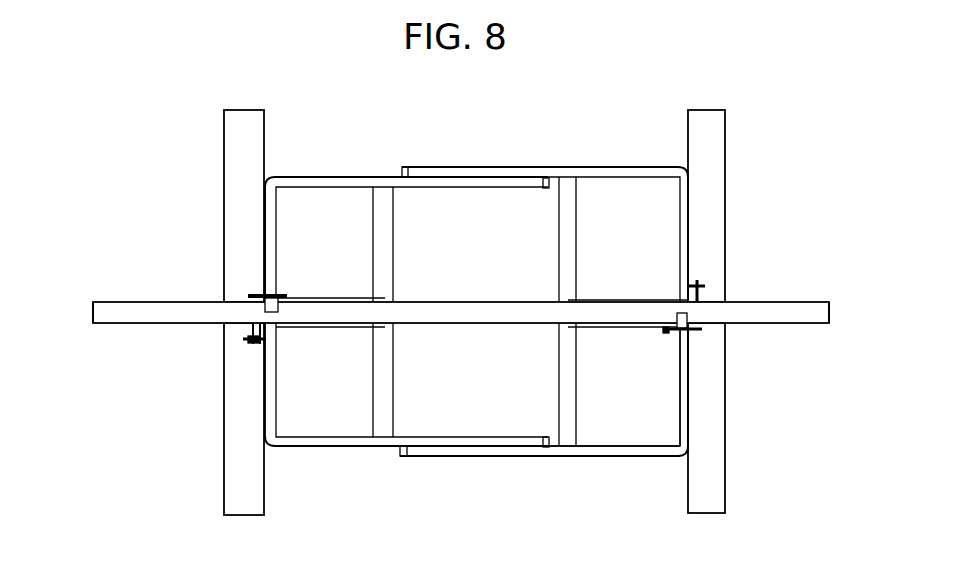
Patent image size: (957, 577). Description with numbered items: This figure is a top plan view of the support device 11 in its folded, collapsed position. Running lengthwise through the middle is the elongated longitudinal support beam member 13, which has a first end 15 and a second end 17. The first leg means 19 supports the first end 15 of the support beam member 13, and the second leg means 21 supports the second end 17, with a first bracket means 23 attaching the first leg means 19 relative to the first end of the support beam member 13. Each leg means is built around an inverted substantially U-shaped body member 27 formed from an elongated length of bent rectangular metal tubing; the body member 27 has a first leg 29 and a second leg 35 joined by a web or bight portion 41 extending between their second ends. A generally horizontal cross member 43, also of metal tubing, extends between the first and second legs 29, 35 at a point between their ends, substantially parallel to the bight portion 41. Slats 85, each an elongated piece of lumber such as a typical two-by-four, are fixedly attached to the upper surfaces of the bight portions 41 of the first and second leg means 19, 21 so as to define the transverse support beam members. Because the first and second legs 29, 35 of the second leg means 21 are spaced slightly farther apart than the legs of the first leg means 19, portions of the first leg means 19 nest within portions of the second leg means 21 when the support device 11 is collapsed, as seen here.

The support device 11 is at (110, 129).
The longitudinal support beam member 13 is at (757, 313).
The first end 15 is at (93, 315).
The second end 17 is at (832, 310).
The first leg means 19 is at (333, 474).
The second leg means 21 is at (627, 160).
The first bracket means 23 is at (280, 298).
The body member 27 is at (305, 444).
The first leg 29 is at (375, 448).
The second leg 35 is at (325, 184).
The bight portion 41 is at (271, 224).
The cross member 43 is at (388, 378).
The slats 85 is at (232, 176).